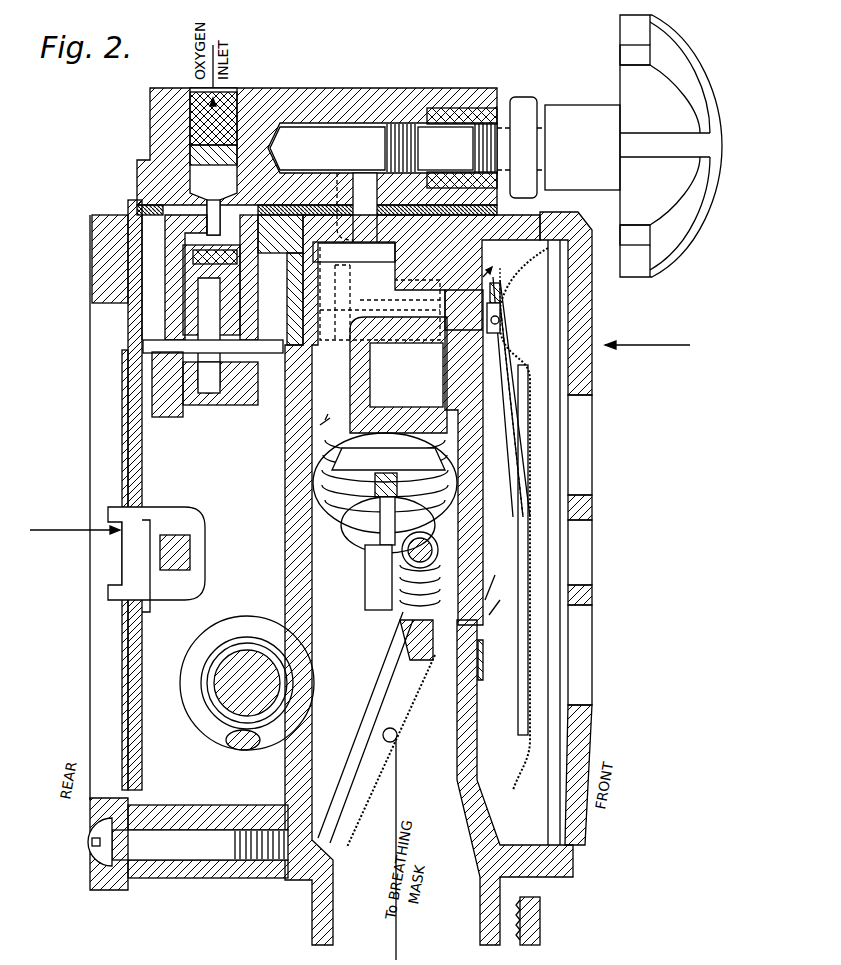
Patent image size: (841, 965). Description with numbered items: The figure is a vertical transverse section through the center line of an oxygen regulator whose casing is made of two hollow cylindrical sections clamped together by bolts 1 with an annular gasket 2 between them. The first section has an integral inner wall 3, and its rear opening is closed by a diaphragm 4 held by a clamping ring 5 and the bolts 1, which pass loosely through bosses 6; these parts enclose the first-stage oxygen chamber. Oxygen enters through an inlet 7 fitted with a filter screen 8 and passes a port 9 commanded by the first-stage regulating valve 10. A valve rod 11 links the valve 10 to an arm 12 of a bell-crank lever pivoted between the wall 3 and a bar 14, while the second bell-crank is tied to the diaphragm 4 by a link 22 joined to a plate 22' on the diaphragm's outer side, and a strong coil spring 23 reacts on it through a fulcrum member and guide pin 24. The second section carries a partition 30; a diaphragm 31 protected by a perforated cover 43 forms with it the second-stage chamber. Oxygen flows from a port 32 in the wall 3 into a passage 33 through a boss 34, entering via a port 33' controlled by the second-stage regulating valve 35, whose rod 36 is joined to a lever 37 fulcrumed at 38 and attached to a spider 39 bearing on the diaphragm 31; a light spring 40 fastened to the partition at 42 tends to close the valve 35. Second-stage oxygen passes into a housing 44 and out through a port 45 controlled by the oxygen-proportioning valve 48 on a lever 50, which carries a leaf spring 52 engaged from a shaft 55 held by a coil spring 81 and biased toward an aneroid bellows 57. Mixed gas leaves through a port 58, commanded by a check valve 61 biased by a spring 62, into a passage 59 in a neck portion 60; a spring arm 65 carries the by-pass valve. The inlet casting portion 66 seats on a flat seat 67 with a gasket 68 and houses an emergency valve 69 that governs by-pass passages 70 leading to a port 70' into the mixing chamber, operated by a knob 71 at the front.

The bolts 1 is at (185, 858).
The annular gasket 2 is at (310, 878).
The inner or front wall 3 is at (290, 590).
The diaphragm 4 is at (122, 455).
The clamping ring 5 is at (95, 298).
The bosses 6 is at (195, 805).
The inlet 7 is at (182, 123).
The filter screen 8 is at (233, 92).
The port 9 is at (213, 210).
The first-stage regulating valve 10 is at (647, 332).
The valve rod 11 is at (198, 308).
The arm of bell-crank lever 12 is at (250, 395).
The bar 14 is at (168, 408).
The link 22 is at (157, 543).
The plate 22' is at (95, 495).
The coil spring 23 is at (190, 700).
The fulcrum member and guide pin 24 is at (225, 675).
The partition 30 is at (477, 735).
The diaphragm 31 is at (560, 835).
The port 32 is at (300, 280).
The passage 33 is at (423, 358).
The port 33' is at (276, 307).
The boss 34 is at (329, 386).
The second-stage regulating valve 35 is at (345, 340).
The rod 36 is at (388, 343).
The lever 37 is at (518, 540).
The fulcrum 38 is at (500, 320).
The spider 39 is at (532, 580).
The spring 40 is at (502, 285).
The fastening point 42 is at (472, 636).
The perforated cover 43 is at (582, 390).
The hollow boss or housing 44 is at (395, 390).
The port 45 is at (475, 398).
The oxygen-proportioning valve 48 is at (330, 470).
The lever 50 is at (375, 490).
The leaf spring 52 is at (380, 592).
The shaft 55 is at (425, 555).
The aneroid bellows 57 is at (325, 538).
The port 58 is at (435, 665).
The passage 59 is at (431, 764).
The neck portion 60 is at (542, 940).
The check valve 61 is at (370, 758).
The spring 62 is at (425, 690).
The spring arm 65 is at (520, 485).
The casting portion 66 is at (432, 97).
The seat 67 is at (455, 172).
The gasket 68 is at (500, 205).
The valve 69 is at (312, 127).
The by-pass passages 70 is at (354, 202).
The port 70' is at (336, 191).
The knob 71 is at (660, 232).
The coil spring 81 is at (376, 659).